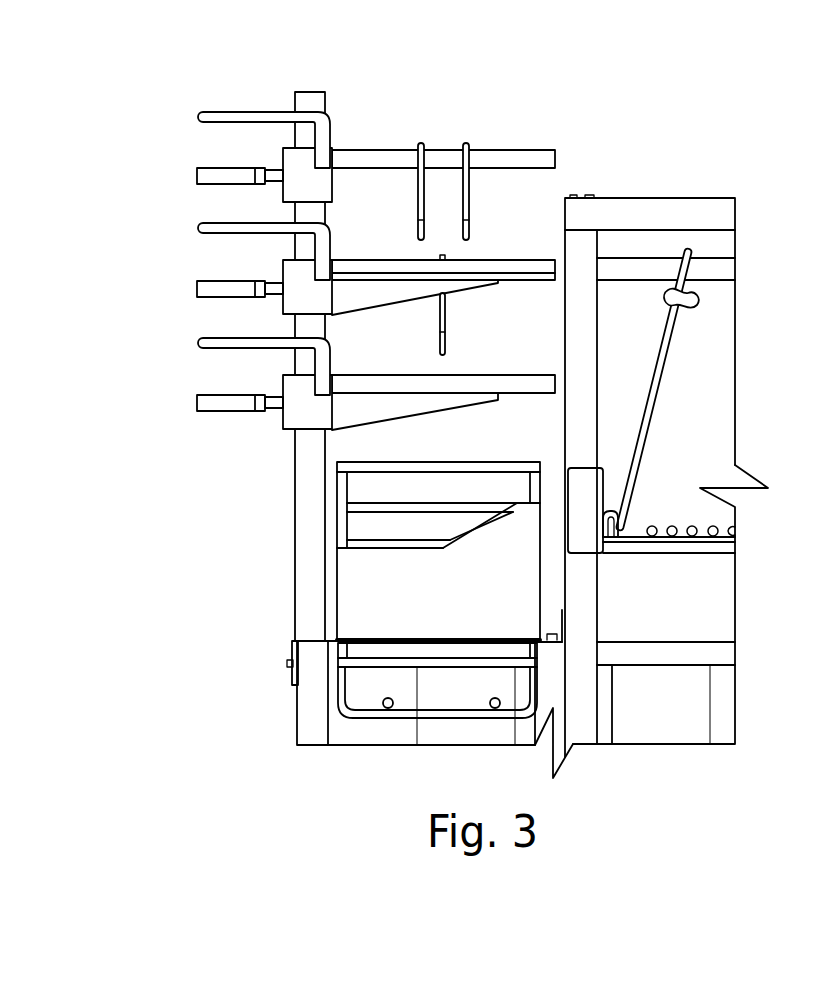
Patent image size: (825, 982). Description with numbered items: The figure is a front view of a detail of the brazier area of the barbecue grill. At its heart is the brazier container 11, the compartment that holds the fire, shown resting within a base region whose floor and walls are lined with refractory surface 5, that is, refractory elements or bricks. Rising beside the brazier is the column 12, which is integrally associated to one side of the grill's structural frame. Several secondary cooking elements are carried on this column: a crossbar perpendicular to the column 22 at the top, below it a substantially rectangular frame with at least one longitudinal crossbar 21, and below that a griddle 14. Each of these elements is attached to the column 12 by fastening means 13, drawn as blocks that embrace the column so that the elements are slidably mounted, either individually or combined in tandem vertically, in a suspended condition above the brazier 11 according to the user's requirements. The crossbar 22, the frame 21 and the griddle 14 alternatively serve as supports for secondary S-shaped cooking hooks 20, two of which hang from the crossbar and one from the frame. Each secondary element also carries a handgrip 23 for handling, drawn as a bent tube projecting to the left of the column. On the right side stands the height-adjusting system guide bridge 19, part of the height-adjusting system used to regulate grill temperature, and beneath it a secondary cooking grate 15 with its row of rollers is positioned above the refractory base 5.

The floor and walls of refractory surface 5 is at (677, 700).
The brazier container 11 is at (372, 585).
The column 12 is at (312, 538).
The fastening means 13 is at (295, 163).
The griddle 14 is at (423, 383).
The secondary cooking grate 15 is at (663, 547).
The height-adjusting system guide bridge 19 is at (582, 248).
The secondary S-shaped cooking hooks 20 is at (468, 182).
The substantially rectangular frame with at least one longitudinal crossbar 21 is at (360, 268).
The crossbar perpendicular to the column 22 is at (373, 160).
The handgrip for handling secondary cooking elements 23 is at (217, 112).